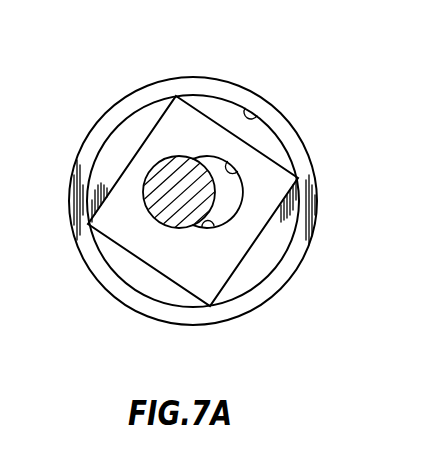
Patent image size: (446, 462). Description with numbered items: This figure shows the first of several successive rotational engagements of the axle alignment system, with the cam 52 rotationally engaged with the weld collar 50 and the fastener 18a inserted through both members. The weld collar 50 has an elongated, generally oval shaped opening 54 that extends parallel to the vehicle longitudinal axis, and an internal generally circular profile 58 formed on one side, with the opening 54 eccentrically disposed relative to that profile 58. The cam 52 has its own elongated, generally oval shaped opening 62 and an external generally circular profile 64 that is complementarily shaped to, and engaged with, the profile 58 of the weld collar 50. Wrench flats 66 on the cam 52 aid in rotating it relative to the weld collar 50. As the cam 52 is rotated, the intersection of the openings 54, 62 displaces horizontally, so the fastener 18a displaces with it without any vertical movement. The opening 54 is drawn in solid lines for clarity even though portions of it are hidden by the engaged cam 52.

The fastener 18a is at (152, 160).
The weld collar 50 is at (235, 85).
The cam 52 is at (199, 95).
The opening 54 is at (243, 177).
The profile 58 is at (262, 122).
The opening 62 is at (207, 218).
The profile 64 is at (253, 300).
The wrench flats 66 is at (145, 265).